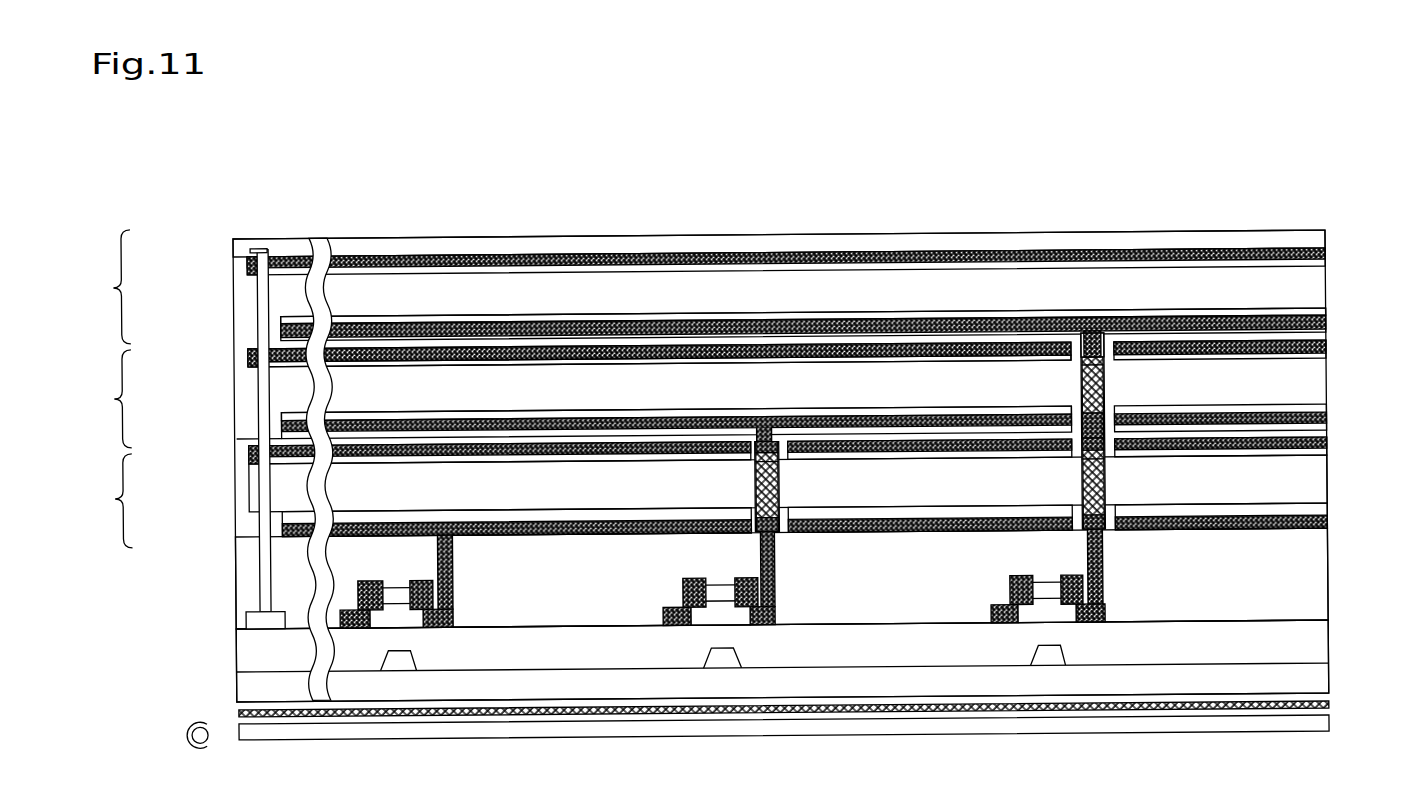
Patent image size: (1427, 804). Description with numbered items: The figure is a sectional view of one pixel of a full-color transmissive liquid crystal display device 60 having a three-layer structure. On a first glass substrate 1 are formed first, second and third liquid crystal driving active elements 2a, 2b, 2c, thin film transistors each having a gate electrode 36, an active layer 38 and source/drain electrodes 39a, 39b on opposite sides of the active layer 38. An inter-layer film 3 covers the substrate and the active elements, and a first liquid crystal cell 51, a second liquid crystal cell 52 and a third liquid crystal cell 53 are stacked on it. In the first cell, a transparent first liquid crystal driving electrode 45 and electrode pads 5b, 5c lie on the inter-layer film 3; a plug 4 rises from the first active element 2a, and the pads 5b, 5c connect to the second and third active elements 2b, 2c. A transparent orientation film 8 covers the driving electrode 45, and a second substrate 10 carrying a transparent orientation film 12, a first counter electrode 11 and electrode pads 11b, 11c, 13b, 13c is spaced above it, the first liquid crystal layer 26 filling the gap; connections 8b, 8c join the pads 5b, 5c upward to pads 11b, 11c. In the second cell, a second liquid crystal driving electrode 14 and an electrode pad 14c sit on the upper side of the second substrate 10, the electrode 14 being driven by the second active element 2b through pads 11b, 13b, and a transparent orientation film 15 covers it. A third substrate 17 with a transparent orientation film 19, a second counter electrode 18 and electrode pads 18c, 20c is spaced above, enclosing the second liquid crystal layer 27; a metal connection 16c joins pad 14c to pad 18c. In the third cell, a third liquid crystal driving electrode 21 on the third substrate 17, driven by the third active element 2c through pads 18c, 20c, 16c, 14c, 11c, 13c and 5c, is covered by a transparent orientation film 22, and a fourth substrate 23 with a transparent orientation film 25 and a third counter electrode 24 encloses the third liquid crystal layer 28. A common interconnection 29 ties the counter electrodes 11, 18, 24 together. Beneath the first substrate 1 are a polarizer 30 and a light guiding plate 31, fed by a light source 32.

The first glass substrate 1 is at (237, 692).
The first liquid crystal driving active element 2a is at (423, 636).
The second liquid crystal driving active element 2b is at (666, 633).
The third liquid crystal driving active element 2c is at (1005, 634).
The inter-layer film 3 is at (1310, 581).
The contact plug 4 is at (460, 567).
The electrode pad 5b is at (773, 545).
The electrode pad 5c is at (1103, 546).
The transparent orientation film 8 is at (1328, 511).
The connection portion 8b is at (758, 529).
The connection portion 8c is at (1085, 531).
The second substrate 10 is at (235, 439).
The first counter electrode 11 is at (1328, 454).
The electrode pad 11b is at (755, 453).
The electrode pad 11c is at (1103, 455).
The transparent orientation film 12 is at (250, 460).
The electrode pad 13b is at (777, 464).
The electrode pad 13c is at (1083, 463).
The second liquid crystal driving electrode 14 is at (280, 425).
The electrode pad 14c is at (1102, 422).
The transparent orientation film 15 is at (1328, 424).
The metal connection 16c is at (1080, 397).
The third substrate 17 is at (247, 352).
The second counter electrode 18 is at (1328, 353).
The electrode pad 18c is at (1103, 350).
The transparent orientation film 19 is at (1328, 371).
The electrode pad 20c is at (1083, 350).
The third liquid crystal driving electrode 21 is at (1328, 319).
The transparent orientation film 22 is at (280, 324).
The fourth substrate 23 is at (250, 258).
The third counter electrode 24 is at (1328, 241).
The transparent orientation film 25 is at (1328, 273).
The first liquid crystal layer 26 is at (372, 502).
The second liquid crystal layer 27 is at (372, 405).
The third liquid crystal layer 28 is at (372, 310).
The common interconnection 29 is at (257, 577).
The polarizer 30 is at (1328, 714).
The light guiding plate 31 is at (1328, 737).
The light source 32 is at (185, 737).
The gate electrode 36 is at (1038, 672).
The active layer 38 is at (1027, 616).
The source/drain electrode 39a is at (985, 612).
The source/drain electrode 39b is at (1085, 620).
The transparent first liquid crystal driving electrode 45 is at (1328, 534).
The first liquid crystal cell 51 is at (105, 501).
The second liquid crystal cell 52 is at (104, 399).
The third liquid crystal cell 53 is at (102, 287).
The transmissive liquid crystal display device 60 is at (1027, 195).